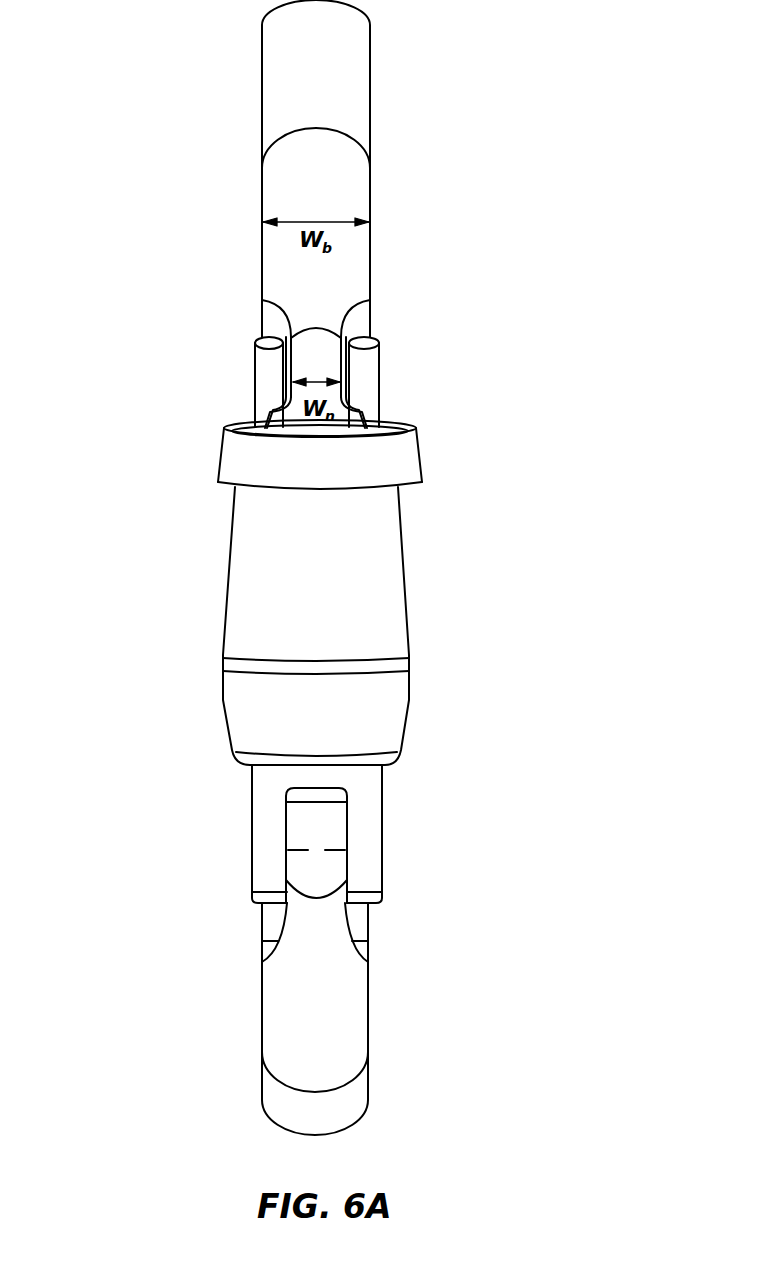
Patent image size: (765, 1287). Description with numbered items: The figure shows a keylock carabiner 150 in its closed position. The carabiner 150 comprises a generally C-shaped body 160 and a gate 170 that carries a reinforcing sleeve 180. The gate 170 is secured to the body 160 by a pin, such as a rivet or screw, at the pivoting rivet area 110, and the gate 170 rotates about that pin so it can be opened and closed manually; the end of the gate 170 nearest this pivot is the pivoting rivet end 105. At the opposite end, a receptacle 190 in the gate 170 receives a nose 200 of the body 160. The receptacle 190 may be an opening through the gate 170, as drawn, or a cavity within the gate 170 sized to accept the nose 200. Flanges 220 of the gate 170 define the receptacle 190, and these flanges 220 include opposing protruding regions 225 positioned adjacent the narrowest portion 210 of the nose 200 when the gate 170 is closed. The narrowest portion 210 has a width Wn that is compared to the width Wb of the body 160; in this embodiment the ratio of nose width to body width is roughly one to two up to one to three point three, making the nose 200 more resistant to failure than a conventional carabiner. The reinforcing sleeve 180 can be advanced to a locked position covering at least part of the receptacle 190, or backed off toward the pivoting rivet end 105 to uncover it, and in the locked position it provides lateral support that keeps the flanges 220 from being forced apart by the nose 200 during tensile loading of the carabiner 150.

The pivoting rivet end 105 is at (385, 788).
The pivoting rivet area 110 is at (135, 800).
The carabiner 150 is at (440, 774).
The body 160 is at (298, 1042).
The gate 170 is at (273, 825).
The reinforcing sleeve 180 is at (377, 620).
The receptacle 190 is at (360, 410).
The nose 200 is at (300, 419).
The narrowest portion 210 is at (320, 362).
The flanges 220 is at (255, 375).
The protruding regions 225 is at (280, 368).